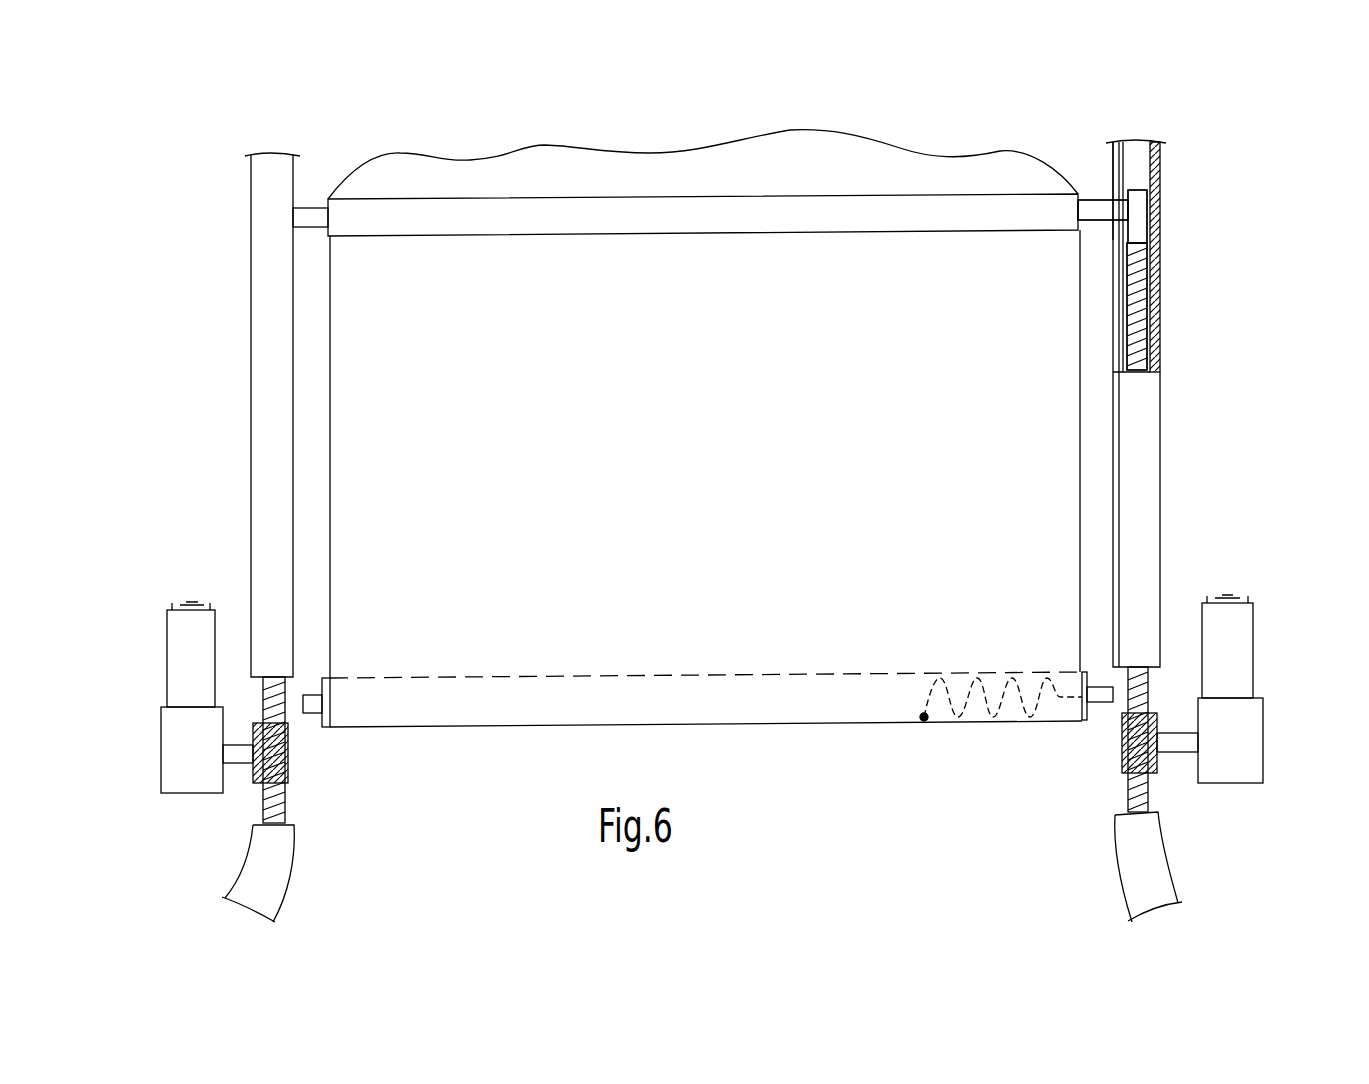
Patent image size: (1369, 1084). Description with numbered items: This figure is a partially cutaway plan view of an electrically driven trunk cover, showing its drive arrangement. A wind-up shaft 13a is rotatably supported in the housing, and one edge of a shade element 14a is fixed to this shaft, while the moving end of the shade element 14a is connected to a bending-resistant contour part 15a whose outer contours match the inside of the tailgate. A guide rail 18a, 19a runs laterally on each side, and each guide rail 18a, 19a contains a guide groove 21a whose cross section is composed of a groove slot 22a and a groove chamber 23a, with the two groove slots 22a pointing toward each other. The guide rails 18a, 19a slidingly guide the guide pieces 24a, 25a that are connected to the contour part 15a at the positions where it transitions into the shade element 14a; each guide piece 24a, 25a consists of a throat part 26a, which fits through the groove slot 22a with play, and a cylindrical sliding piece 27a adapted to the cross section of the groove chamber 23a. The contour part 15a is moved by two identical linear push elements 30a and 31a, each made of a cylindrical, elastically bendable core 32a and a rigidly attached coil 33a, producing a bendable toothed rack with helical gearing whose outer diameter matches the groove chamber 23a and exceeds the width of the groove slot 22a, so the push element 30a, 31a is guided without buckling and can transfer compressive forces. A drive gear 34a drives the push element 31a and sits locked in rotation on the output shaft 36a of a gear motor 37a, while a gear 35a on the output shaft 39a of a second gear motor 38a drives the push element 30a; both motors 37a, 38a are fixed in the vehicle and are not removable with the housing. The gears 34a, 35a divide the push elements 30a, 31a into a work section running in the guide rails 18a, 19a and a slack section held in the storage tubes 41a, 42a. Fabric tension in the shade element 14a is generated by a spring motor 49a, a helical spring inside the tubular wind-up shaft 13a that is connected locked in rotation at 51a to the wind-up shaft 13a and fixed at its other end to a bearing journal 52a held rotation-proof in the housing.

The wind-up shaft 13a is at (490, 678).
The shade element 14a is at (698, 472).
The contour part 15a is at (755, 191).
The guide rail 18a is at (240, 408).
The guide rail 19a is at (1162, 490).
The guide groove 21a is at (1107, 317).
The groove slot 22a is at (1115, 162).
The groove chamber 23a is at (1137, 190).
The guide piece 24a is at (310, 192).
The guide piece 25a is at (1088, 186).
The throat part 26a is at (1080, 233).
The sliding piece 27a is at (1138, 223).
The linear push element 30a is at (300, 800).
The linear push element 31a is at (1162, 325).
The core 32a is at (1140, 350).
The coil 33a is at (1160, 358).
The drive gear 34a is at (1120, 735).
The gear 35a is at (300, 757).
The output shaft 36a is at (1175, 748).
The gear motor 37a is at (1266, 657).
The gear motor 38a is at (160, 655).
The output shaft 39a is at (242, 760).
The storage tube 41a is at (287, 872).
The storage tube 42a is at (1160, 873).
The spring motor 49a is at (973, 656).
The connection point 51a is at (924, 720).
The bearing journal 52a is at (1105, 688).